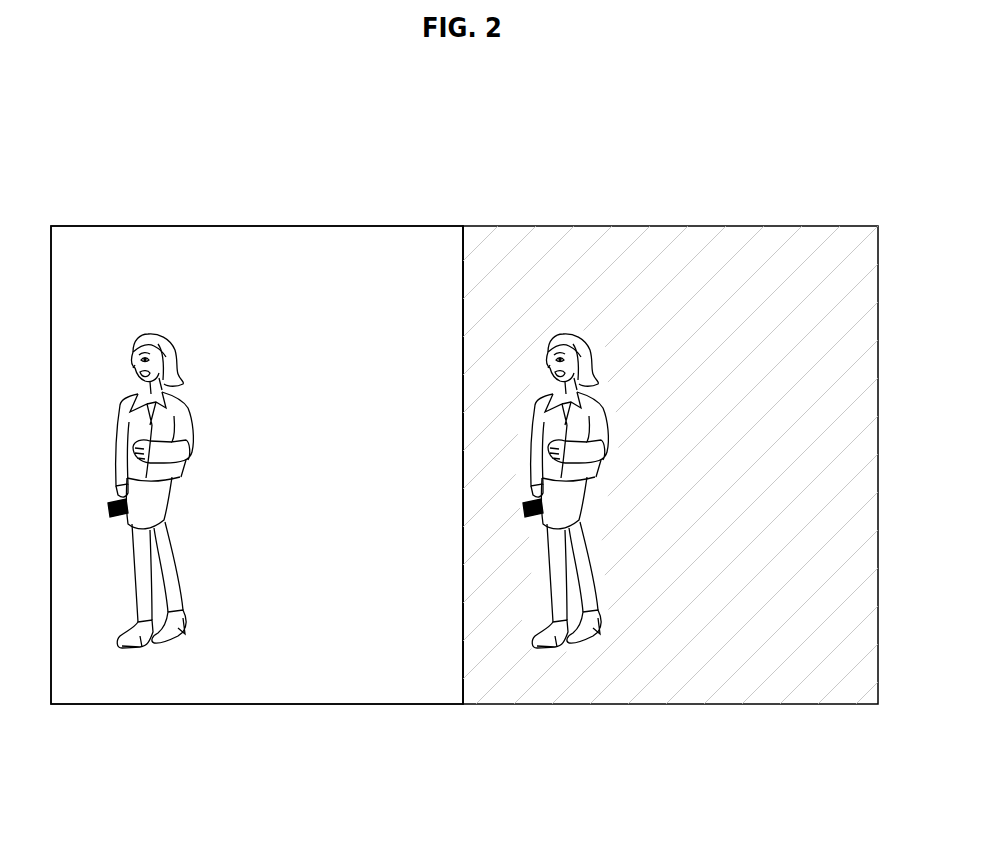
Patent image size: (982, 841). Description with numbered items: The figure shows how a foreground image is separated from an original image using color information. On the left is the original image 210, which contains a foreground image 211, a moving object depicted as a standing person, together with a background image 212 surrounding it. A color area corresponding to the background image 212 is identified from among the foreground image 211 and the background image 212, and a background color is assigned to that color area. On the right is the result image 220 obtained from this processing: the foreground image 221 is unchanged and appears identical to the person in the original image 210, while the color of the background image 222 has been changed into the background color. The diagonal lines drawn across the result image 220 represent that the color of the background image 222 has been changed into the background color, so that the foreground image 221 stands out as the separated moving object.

The original image 210 is at (263, 225).
The foreground image 211 is at (162, 640).
The background image 212 is at (323, 673).
The result image 220 is at (678, 225).
The foreground image 221 is at (577, 640).
The background image 222 is at (768, 673).